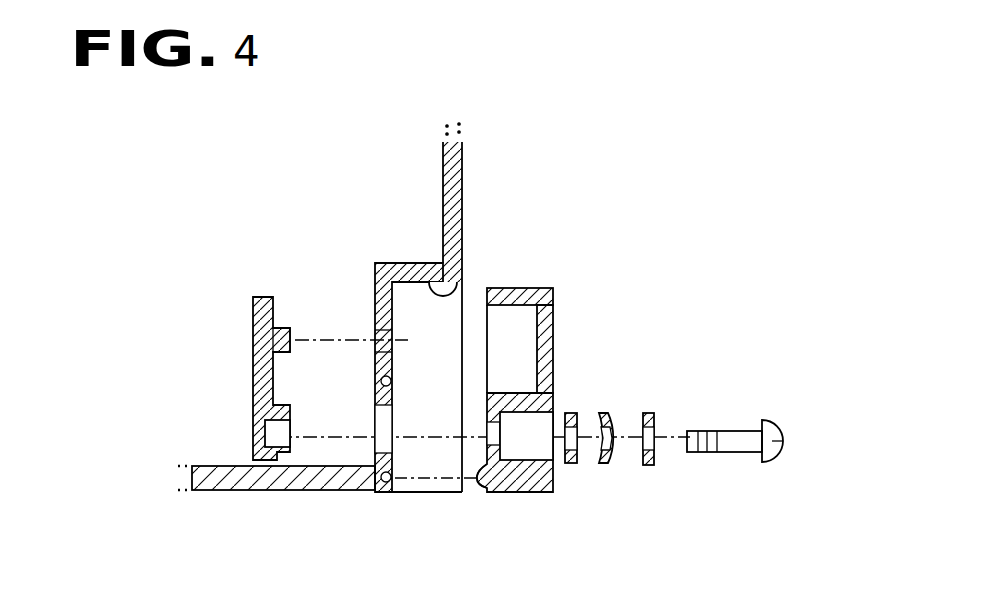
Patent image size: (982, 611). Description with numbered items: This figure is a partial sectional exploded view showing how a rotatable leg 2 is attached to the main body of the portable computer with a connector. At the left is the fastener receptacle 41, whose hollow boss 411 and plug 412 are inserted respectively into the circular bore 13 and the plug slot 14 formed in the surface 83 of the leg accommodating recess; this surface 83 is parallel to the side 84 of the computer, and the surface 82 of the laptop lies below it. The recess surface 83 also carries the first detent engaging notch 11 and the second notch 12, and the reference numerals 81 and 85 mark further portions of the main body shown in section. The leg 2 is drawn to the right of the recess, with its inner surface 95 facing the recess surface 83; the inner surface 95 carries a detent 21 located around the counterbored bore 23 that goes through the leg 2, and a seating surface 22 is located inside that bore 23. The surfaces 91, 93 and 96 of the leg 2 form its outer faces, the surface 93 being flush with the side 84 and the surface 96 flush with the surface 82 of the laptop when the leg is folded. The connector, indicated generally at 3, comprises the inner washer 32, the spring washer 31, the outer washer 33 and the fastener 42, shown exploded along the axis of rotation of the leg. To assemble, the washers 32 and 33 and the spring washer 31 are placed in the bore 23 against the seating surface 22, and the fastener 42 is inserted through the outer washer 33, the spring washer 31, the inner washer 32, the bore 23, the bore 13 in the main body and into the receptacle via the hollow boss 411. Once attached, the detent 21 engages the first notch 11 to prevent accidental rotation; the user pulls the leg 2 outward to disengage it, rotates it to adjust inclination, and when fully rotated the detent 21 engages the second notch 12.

The fastener receptacle 41 is at (252, 356).
The plug 412 is at (286, 326).
The hollow boss 411 is at (283, 461).
The surface of the laptop 82 is at (318, 492).
The side of the computer 84 is at (462, 205).
The surface of the recess 83 is at (393, 286).
The ball socket 81 is at (458, 293).
The recess 85 is at (423, 457).
The first detent engaging notch 11 is at (396, 483).
The second notch 12 is at (396, 380).
The circular bore 13 is at (396, 438).
The plug slot 14 is at (395, 333).
The inner surface of the leg 95 is at (488, 290).
The rotatable leg 2 is at (535, 287).
The upper wall 91 is at (545, 300).
The surface of the leg 93 is at (553, 336).
The surface of the leg 96 is at (520, 494).
The seating surface 22 is at (528, 454).
The detent 21 is at (480, 485).
The counterbored bore 23 is at (495, 456).
The fastening members 3 is at (664, 358).
The inner washer 32 is at (571, 412).
The spring washer 31 is at (604, 412).
The outer washer 33 is at (649, 412).
The fastener 42 is at (776, 432).